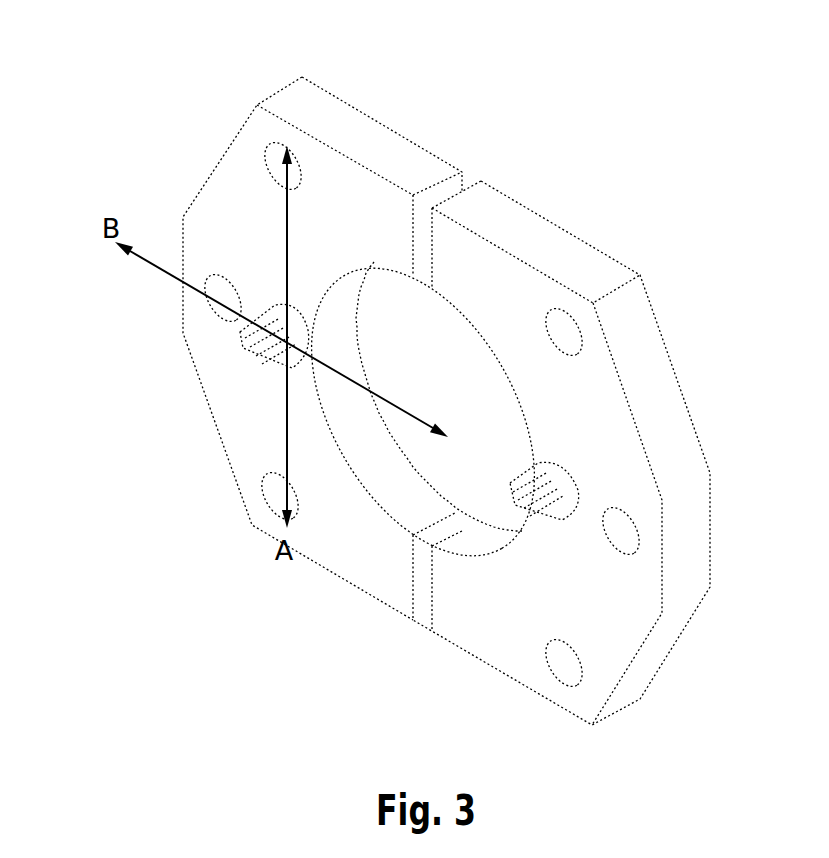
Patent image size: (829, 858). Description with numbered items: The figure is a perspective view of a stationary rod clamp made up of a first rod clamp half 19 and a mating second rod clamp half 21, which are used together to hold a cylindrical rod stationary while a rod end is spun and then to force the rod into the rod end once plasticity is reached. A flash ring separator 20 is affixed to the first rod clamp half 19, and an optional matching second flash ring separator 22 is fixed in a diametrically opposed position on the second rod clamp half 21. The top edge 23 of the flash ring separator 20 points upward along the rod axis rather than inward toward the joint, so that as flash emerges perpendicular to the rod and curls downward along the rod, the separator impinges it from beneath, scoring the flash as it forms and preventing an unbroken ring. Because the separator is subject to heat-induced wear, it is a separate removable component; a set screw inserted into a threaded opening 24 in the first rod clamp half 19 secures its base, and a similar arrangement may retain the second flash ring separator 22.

The first rod clamp half 19 is at (285, 97).
The second rod clamp half 21 is at (607, 270).
The flash ring separator 20 is at (270, 316).
The second flash ring separator 22 is at (549, 478).
The top edge 23 is at (267, 352).
The threaded opening 24 is at (325, 343).